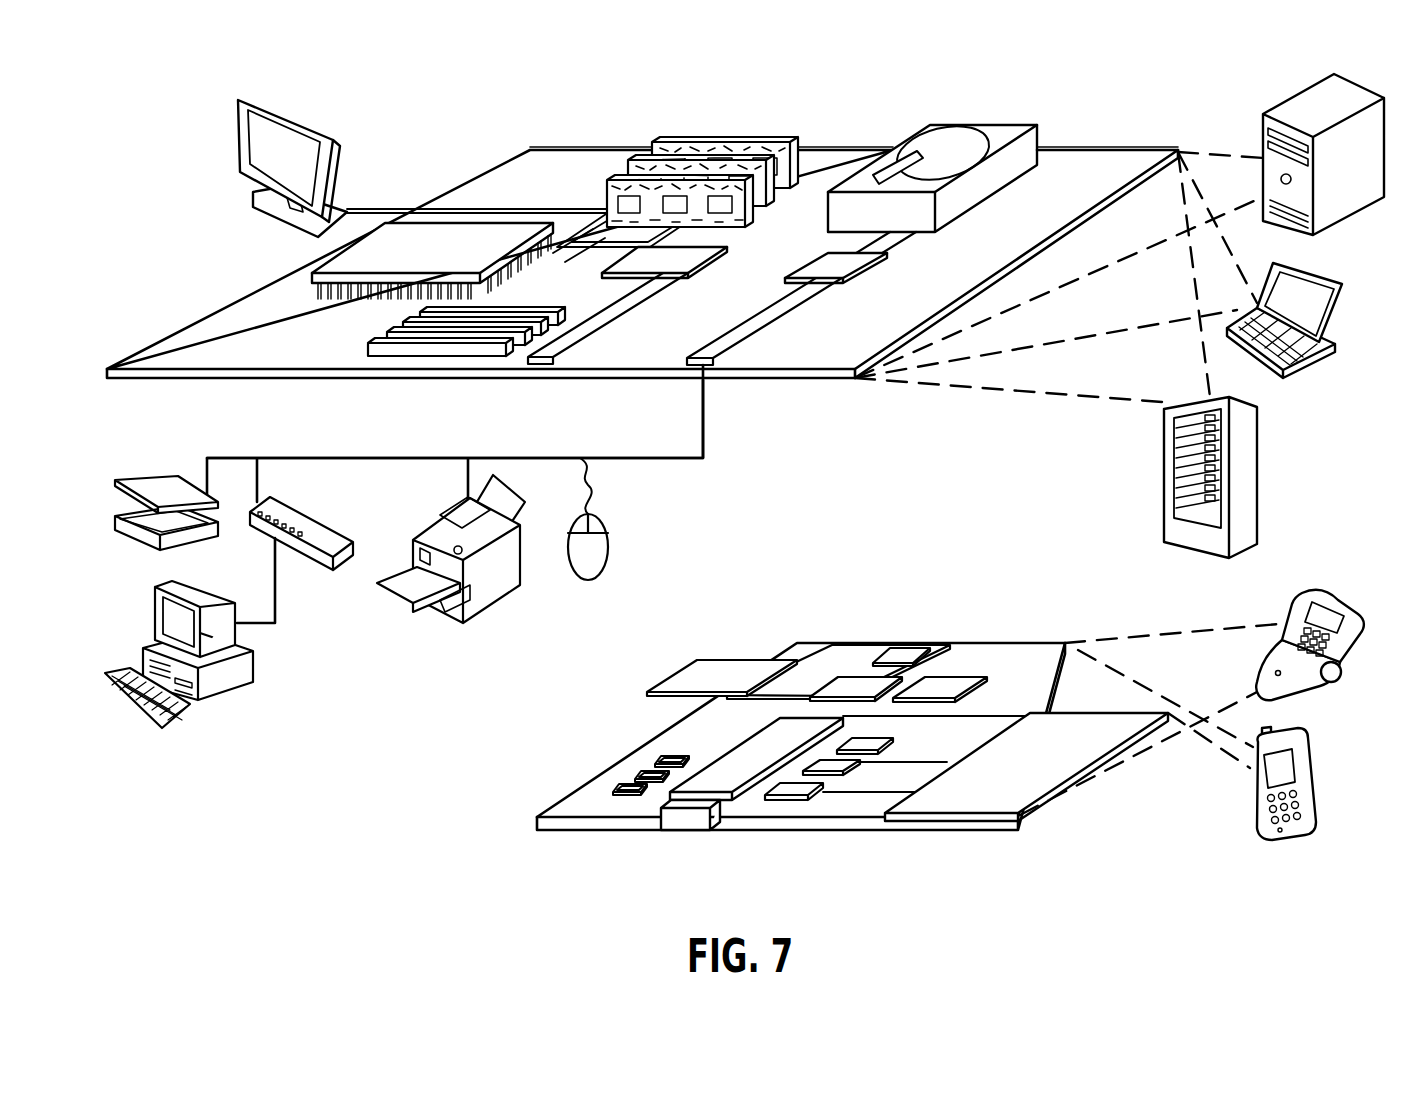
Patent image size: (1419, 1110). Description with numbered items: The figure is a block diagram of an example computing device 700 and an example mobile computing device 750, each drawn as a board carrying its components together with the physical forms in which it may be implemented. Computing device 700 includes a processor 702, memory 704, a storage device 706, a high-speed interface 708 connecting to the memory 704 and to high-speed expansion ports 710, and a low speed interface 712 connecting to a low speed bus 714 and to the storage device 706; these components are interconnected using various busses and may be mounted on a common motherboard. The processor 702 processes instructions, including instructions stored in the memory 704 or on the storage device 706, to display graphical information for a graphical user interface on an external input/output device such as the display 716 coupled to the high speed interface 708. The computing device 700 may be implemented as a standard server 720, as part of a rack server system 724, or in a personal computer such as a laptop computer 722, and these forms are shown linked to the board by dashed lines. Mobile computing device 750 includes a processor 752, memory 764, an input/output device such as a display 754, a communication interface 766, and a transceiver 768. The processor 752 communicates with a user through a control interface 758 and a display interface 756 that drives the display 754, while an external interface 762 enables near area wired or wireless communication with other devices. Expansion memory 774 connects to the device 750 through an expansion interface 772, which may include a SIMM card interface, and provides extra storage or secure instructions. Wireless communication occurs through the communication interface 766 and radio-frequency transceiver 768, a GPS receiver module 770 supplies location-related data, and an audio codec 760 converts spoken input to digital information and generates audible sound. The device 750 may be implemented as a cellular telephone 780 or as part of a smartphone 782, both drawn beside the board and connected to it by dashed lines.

The computing device 700 is at (447, 122).
The processor 702 is at (312, 273).
The memory 704 is at (662, 110).
The storage device 706 is at (913, 125).
The high-speed interface 708 is at (628, 256).
The high-speed expansion ports 710 is at (387, 336).
The low speed interface 712 is at (825, 262).
The low speed bus 714 is at (707, 372).
The display 716 is at (247, 97).
The standard server 720 is at (1256, 125).
The laptop computer 722 is at (1330, 293).
The rack server system 724 is at (1164, 500).
The mobile computing device 750 is at (512, 826).
The processor 752 is at (727, 783).
The display 754 is at (980, 800).
The display interface 756 is at (810, 795).
The control interface 758 is at (847, 773).
The audio codec 760 is at (867, 747).
The external interface 762 is at (690, 825).
The memory 764 is at (640, 774).
The communication interface 766 is at (855, 683).
The transceiver 768 is at (942, 683).
The GPS receiver module 770 is at (913, 650).
The expansion interface 772 is at (783, 658).
The expansion memory 774 is at (695, 670).
The cellular telephone 780 is at (1318, 565).
The smartphone 782 is at (1255, 780).